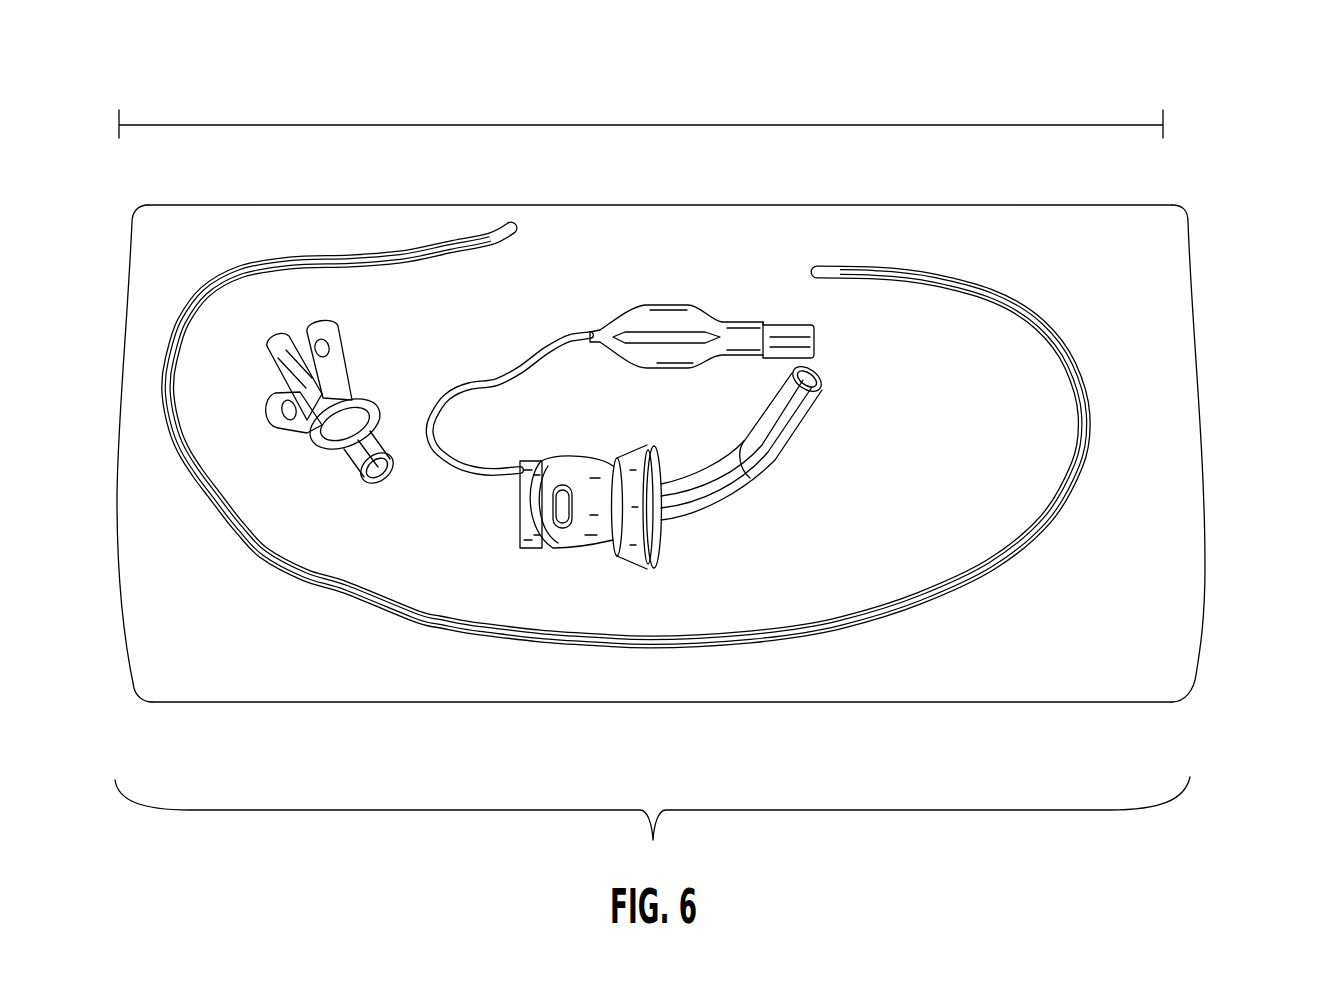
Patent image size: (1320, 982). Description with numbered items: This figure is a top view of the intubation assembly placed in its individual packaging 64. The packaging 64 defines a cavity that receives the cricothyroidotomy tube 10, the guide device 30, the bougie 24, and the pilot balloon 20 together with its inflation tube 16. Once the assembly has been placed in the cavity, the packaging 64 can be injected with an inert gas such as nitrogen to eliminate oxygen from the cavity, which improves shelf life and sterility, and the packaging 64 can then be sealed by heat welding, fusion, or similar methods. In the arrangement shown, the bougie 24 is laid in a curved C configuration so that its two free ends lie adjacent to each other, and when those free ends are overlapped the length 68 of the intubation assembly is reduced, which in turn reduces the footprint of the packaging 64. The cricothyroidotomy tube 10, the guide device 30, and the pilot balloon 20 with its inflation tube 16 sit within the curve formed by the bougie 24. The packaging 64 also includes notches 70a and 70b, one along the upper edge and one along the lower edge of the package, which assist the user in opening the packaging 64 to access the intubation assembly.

The cricothyroidotomy tube 10 is at (758, 478).
The inflation tube 16 is at (487, 383).
The pilot balloon 20 is at (615, 327).
The bougie 24 is at (1000, 290).
The guide device 30 is at (293, 437).
The individual packaging 64 is at (1193, 317).
The length 68 is at (700, 125).
The notch 70a is at (232, 235).
The notch 70b is at (202, 685).